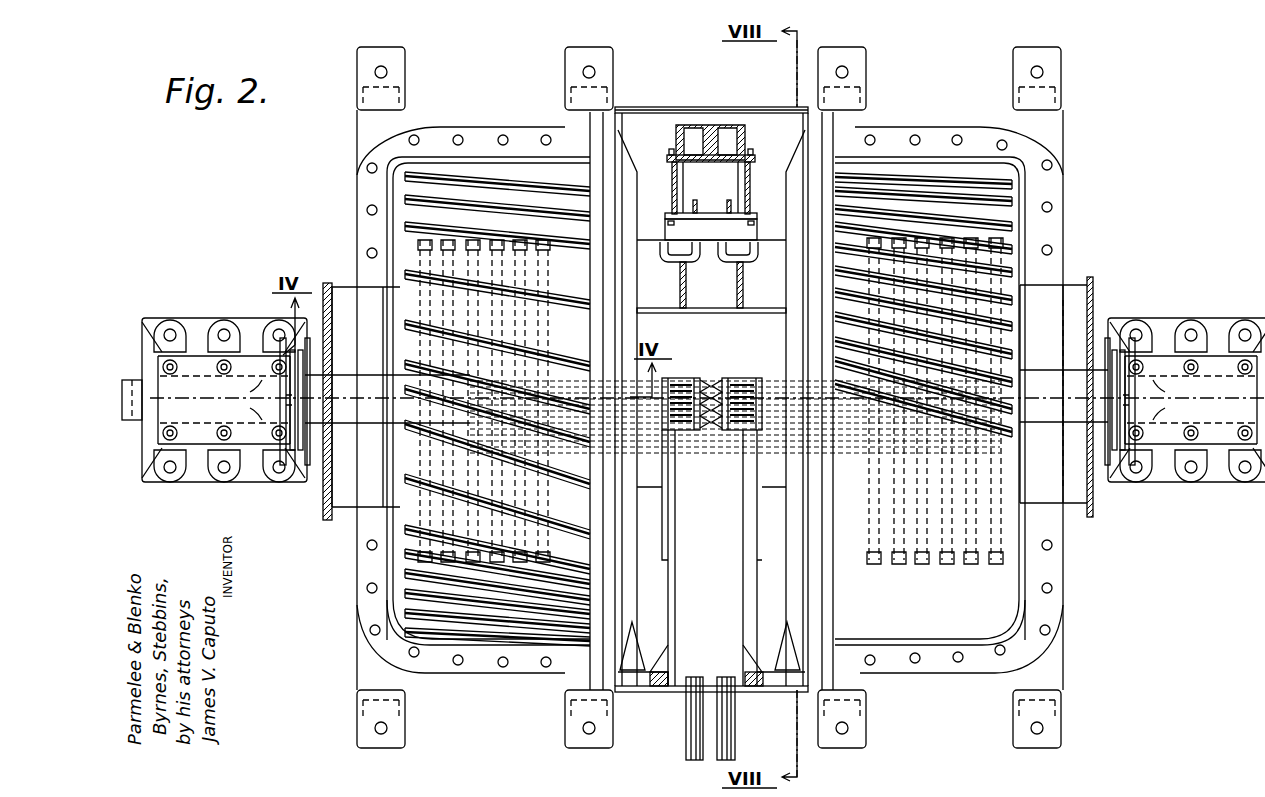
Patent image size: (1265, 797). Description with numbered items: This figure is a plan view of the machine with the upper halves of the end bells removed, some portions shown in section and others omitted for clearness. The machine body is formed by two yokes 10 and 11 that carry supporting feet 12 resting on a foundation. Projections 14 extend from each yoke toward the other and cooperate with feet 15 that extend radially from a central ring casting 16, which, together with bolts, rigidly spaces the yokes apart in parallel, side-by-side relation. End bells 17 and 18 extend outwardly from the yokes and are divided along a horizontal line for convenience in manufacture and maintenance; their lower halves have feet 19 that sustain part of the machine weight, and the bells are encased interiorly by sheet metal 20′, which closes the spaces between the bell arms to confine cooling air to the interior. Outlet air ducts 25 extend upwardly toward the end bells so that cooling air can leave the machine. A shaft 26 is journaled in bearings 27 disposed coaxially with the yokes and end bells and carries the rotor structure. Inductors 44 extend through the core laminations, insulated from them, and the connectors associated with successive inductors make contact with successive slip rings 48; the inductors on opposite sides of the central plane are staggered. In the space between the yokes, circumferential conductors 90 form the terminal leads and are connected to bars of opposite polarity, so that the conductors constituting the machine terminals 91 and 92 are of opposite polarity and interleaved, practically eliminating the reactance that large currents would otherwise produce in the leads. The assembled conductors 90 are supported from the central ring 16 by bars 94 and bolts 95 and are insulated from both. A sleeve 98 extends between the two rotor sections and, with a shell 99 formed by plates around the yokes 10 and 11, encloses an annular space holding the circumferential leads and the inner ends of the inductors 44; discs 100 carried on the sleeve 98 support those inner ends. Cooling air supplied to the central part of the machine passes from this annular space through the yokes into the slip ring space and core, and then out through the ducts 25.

The yoke 10 is at (608, 167).
The yoke 11 is at (813, 150).
The supporting feet 12 is at (582, 58).
The projections 14 is at (645, 681).
The feet 15 is at (763, 680).
The central ring casting 16 is at (707, 124).
The end bell 17 is at (472, 121).
The end bell 18 is at (918, 121).
The feet 19 is at (1046, 59).
The sheet metal casing 20′ is at (492, 152).
The outlet air ducts 25 is at (330, 493).
The shaft 26 is at (366, 378).
The bearings 27 is at (205, 432).
The inductors 44 is at (736, 430).
The slip rings 48 is at (476, 481).
The conductors 90 is at (727, 204).
The machine terminal 91 is at (690, 742).
The machine terminal 92 is at (727, 742).
The bars 94 is at (668, 214).
The bolts 95 is at (670, 186).
The sleeve 98 is at (757, 322).
The shell 99 is at (653, 99).
The discs 100 is at (737, 262).